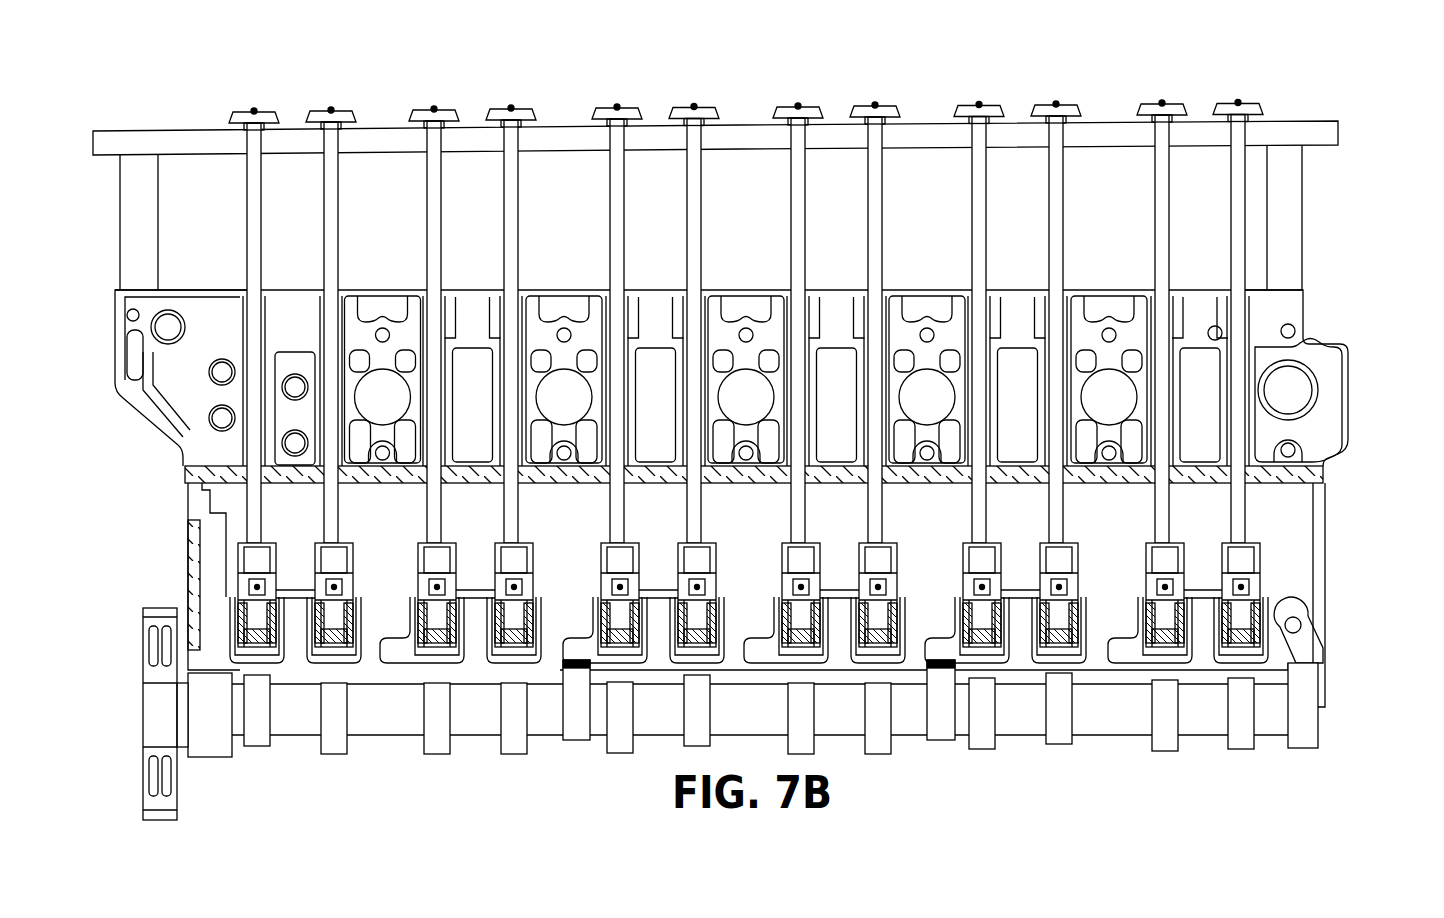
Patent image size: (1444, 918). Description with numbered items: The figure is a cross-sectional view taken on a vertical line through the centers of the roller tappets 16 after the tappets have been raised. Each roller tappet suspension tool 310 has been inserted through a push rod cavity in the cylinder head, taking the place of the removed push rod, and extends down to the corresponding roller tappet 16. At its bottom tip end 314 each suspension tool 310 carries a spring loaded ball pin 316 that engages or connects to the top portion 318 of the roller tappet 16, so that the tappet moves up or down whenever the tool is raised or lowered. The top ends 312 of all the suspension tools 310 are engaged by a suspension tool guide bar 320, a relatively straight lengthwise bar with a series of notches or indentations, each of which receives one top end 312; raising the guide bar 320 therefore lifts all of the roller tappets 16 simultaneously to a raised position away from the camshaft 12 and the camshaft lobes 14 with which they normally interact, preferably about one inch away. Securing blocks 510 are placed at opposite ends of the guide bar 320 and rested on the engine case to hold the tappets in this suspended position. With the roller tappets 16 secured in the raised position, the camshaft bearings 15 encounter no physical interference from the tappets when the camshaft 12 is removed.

The camshaft 12 is at (150, 713).
The camshaft lobes 14 is at (253, 728).
The camshaft bearings 15 is at (575, 735).
The roller tappet 16 is at (240, 595).
The roller tappet suspension tool 310 is at (247, 204).
The top end 312 is at (322, 111).
The bottom tip end 314 is at (1240, 503).
The spring loaded ball pin 316 is at (1227, 580).
The top portion 318 is at (1260, 588).
The suspension tool guide bar 320 is at (1282, 138).
The securing blocks 510 is at (140, 267).